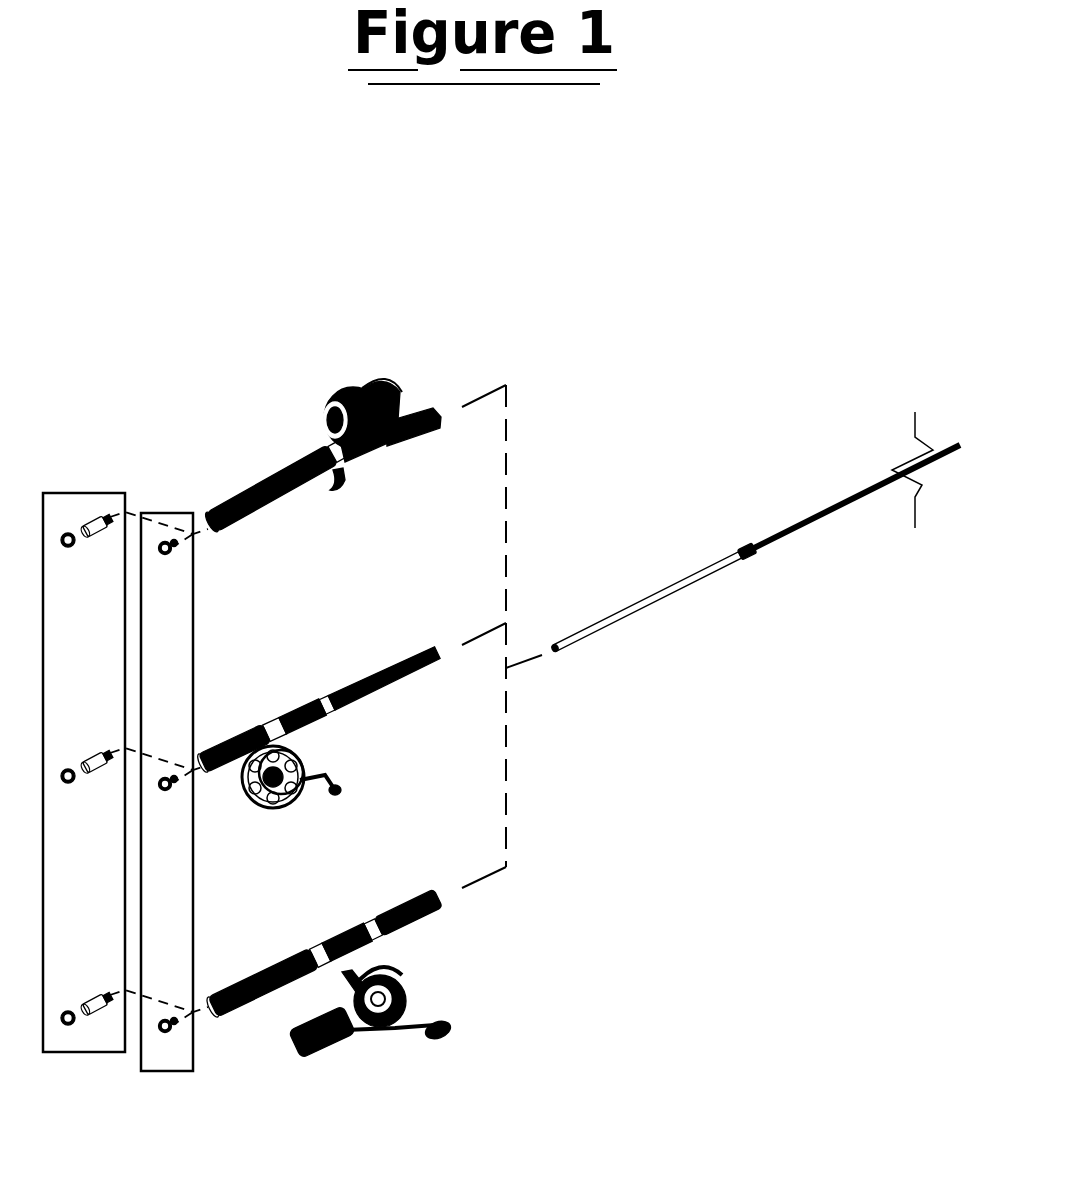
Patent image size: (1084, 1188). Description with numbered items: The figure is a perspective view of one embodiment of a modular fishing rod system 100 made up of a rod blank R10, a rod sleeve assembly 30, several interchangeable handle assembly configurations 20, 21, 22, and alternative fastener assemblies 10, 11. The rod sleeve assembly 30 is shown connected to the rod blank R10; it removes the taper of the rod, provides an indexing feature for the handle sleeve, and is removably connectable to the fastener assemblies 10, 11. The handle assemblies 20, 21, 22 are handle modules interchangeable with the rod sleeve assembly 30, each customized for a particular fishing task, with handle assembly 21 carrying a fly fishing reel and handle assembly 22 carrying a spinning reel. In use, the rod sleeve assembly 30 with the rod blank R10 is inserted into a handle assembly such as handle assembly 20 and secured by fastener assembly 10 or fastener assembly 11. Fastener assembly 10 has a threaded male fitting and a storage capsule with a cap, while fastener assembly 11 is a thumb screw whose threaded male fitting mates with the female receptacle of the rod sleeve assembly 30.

The modular fishing rod system 100 is at (760, 256).
The fastener assembly 10 is at (83, 493).
The fastener assembly 11 is at (167, 513).
The handle assembly 20 is at (428, 370).
The handle assembly 21 is at (428, 612).
The handle assembly 22 is at (428, 872).
The rod sleeve assembly 30 is at (637, 565).
The rod blank R10 is at (865, 477).